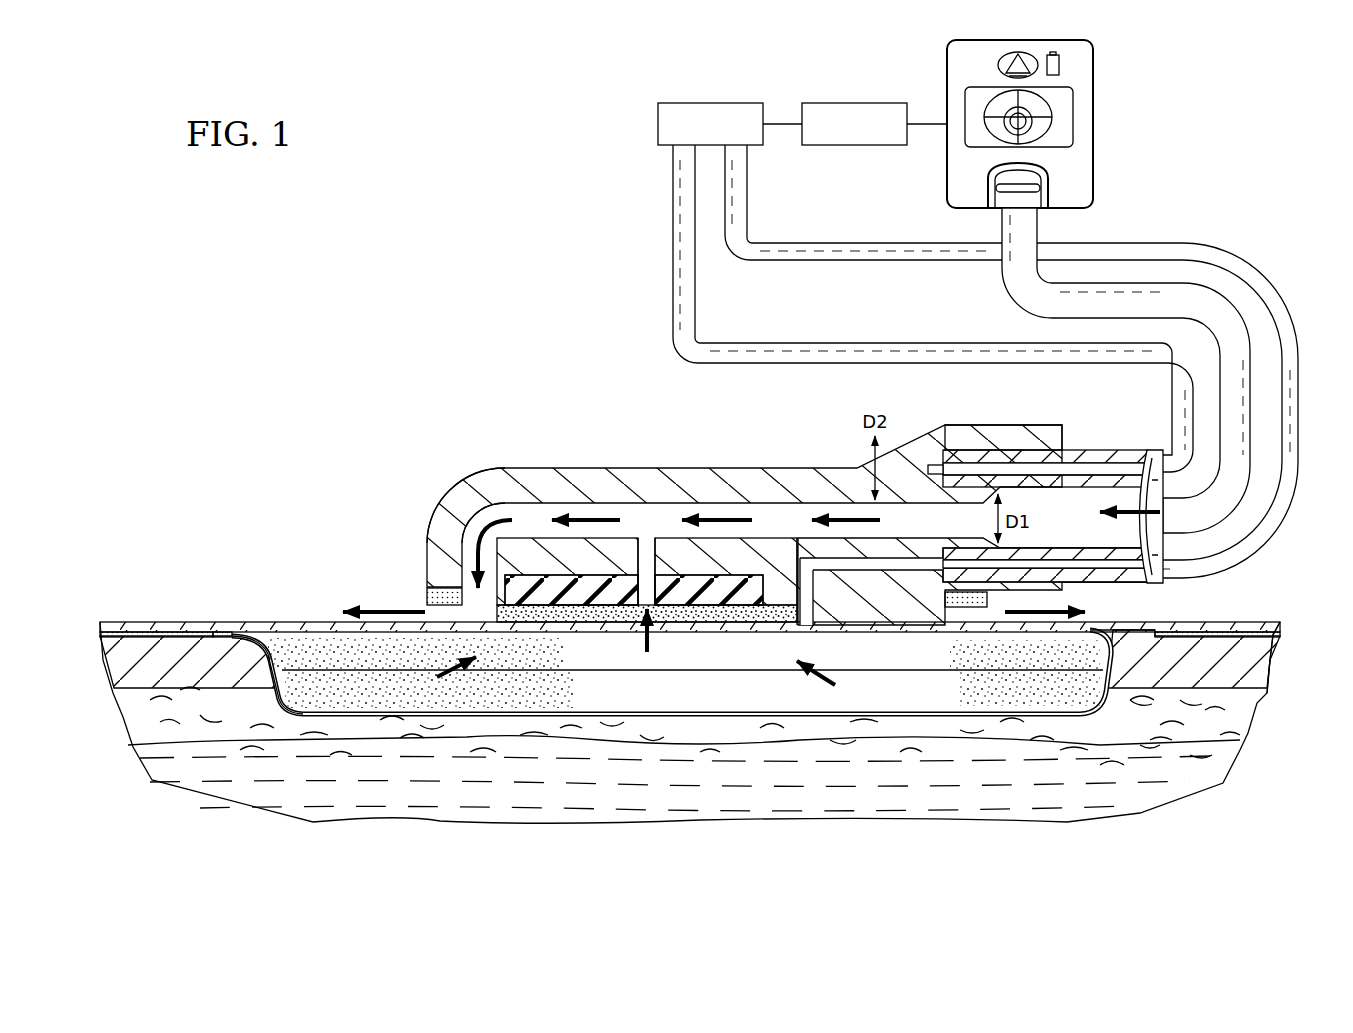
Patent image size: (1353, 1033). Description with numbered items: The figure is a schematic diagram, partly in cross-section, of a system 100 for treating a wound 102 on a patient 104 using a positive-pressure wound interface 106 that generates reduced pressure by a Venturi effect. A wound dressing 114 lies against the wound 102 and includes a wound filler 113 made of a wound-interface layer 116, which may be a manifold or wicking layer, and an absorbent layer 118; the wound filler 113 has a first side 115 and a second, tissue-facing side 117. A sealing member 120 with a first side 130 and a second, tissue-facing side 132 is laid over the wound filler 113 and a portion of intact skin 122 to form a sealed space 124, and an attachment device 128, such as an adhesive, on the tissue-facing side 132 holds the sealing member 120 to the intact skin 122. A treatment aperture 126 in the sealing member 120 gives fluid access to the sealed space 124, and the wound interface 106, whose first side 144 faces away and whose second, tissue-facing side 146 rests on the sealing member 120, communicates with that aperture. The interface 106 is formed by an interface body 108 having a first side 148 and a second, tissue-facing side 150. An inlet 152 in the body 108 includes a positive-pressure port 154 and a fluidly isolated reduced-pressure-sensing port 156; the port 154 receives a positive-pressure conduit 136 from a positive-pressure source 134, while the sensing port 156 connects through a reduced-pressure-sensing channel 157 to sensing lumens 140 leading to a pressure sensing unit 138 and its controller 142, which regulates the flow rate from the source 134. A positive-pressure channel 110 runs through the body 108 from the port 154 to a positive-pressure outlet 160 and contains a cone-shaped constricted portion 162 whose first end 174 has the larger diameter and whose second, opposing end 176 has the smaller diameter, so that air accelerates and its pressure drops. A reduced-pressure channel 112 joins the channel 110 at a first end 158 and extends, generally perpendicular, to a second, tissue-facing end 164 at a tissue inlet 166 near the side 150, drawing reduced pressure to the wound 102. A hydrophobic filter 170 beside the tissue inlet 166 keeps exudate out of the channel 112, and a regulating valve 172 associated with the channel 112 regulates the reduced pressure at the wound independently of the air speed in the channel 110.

The system 100 is at (396, 286).
The wound 102 is at (822, 708).
The patient 104 is at (141, 789).
The positive-pressure wound interface 106 is at (726, 457).
The interface body 108 is at (607, 537).
The positive-pressure channel 110 is at (522, 505).
The reduced-pressure channel 112 is at (646, 590).
The wound filler 113 is at (279, 700).
The wound dressing 114 is at (170, 538).
The first side 115 is at (1105, 616).
The wound-interface layer 116 is at (1093, 700).
The second, tissue-facing side 117 is at (497, 722).
The absorbent layer 118 is at (1108, 656).
The sealing member 120 is at (150, 620).
The intact skin 122 is at (1276, 668).
The sealed space 124 is at (263, 630).
The treatment aperture 126 is at (780, 668).
The attachment device 128 is at (178, 630).
The first side 130 is at (318, 620).
The second, tissue-facing side 132 is at (228, 636).
The positive-pressure source 134 is at (1096, 120).
The positive-pressure conduit 136 is at (1018, 290).
The pressure sensing unit 138 is at (688, 139).
The sensing lumens 140 is at (752, 190).
The controller 142 is at (833, 139).
The first side 144 is at (481, 467).
The second, tissue-facing side 146 is at (882, 639).
The first side 148 is at (767, 468).
The second, tissue-facing side 150 is at (878, 627).
The inlet 152 is at (1137, 447).
The positive-pressure port 154 is at (1022, 628).
The reduced-pressure-sensing port 156 is at (925, 465).
The reduced-pressure-sensing channel 157 is at (862, 575).
The first end 158 is at (688, 563).
The positive-pressure outlet 160 is at (424, 608).
The constricted portion 162 is at (978, 504).
The second, tissue-facing end 164 is at (652, 665).
The tissue inlet 166 is at (624, 668).
The hydrophobic filter 170 is at (480, 668).
The regulating valve 172 is at (746, 600).
The first end 174 is at (1003, 492).
The second, opposing end 176 is at (847, 503).